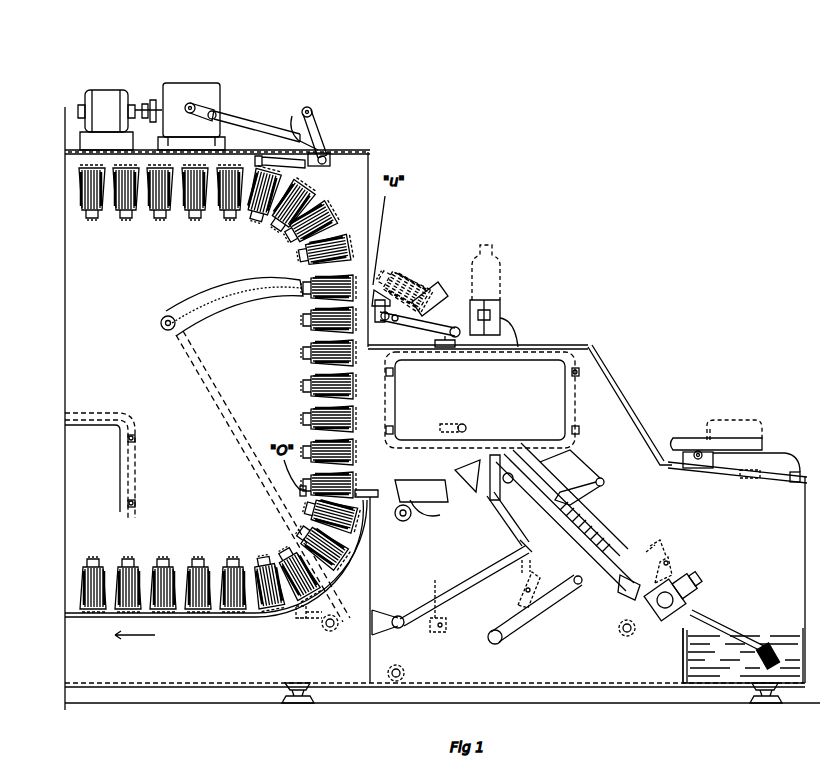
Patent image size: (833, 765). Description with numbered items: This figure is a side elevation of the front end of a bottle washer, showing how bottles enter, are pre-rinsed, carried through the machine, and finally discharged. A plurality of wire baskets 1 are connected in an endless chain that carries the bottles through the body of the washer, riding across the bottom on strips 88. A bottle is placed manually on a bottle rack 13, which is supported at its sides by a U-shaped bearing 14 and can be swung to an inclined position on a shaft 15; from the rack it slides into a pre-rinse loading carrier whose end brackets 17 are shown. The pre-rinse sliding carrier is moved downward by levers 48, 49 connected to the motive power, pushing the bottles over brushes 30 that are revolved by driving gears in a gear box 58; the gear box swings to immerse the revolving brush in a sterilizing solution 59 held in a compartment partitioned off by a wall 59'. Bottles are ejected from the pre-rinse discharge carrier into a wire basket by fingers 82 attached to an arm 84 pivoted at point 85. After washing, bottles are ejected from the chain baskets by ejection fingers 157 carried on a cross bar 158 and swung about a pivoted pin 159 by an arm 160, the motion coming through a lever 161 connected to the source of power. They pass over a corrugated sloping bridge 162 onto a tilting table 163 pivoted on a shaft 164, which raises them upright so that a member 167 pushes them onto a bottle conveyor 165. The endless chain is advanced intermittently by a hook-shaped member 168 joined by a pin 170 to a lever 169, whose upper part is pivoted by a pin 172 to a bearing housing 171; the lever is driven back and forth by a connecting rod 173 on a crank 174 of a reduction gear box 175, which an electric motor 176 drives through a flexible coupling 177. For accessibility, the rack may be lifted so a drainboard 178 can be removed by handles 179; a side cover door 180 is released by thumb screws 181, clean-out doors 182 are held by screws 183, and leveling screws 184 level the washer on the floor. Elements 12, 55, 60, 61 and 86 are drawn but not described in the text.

The wire baskets 1 is at (78, 183).
The bottle cap 12 is at (752, 425).
The bottle rack 13 is at (766, 446).
The U-shaped bearing 14 is at (704, 468).
The shaft 15 is at (696, 459).
The end brackets 17 is at (603, 486).
The brushes 30 is at (770, 642).
The lever 48 is at (548, 616).
The lever 49 is at (518, 602).
The fitting 55 is at (470, 434).
The gear box 58 is at (690, 590).
The sterilizing solution 59 is at (743, 655).
The wall 59' is at (666, 655).
The link 60 is at (672, 560).
The bracket 61 is at (657, 542).
The fingers 82 is at (490, 518).
The arm 84 is at (462, 590).
The pivot point 85 is at (400, 630).
The guide 86 is at (442, 632).
The strips 88 is at (218, 617).
The ejection fingers 157 is at (220, 283).
The cross bar 158 is at (165, 316).
The pivoted pin 159 is at (336, 628).
The arm 160 is at (210, 395).
The lever 161 is at (298, 620).
The corrugated sloping bridge 162 is at (388, 290).
The tilting table 163 is at (426, 298).
The shaft 164 is at (458, 340).
The bottle conveyor 165 is at (502, 310).
The member 167 is at (430, 325).
The hook-shaped member 168 is at (305, 166).
The lever 169 is at (322, 128).
The pin 170 is at (330, 156).
The bearing housing 171 is at (292, 116).
The pin 172 is at (312, 108).
The connecting rod 173 is at (256, 120).
The crank 174 is at (193, 104).
The reduction gear box 175 is at (186, 83).
The electric motor 176 is at (106, 90).
The flexible coupling 177 is at (148, 100).
The drainboard 178 is at (795, 483).
The handles 179 is at (752, 478).
The side cover door 180 is at (578, 405).
The thumb screws 181 is at (580, 372).
The clean-out doors 182 is at (110, 420).
The screws 183 is at (136, 503).
The leveling screws 184 is at (298, 703).